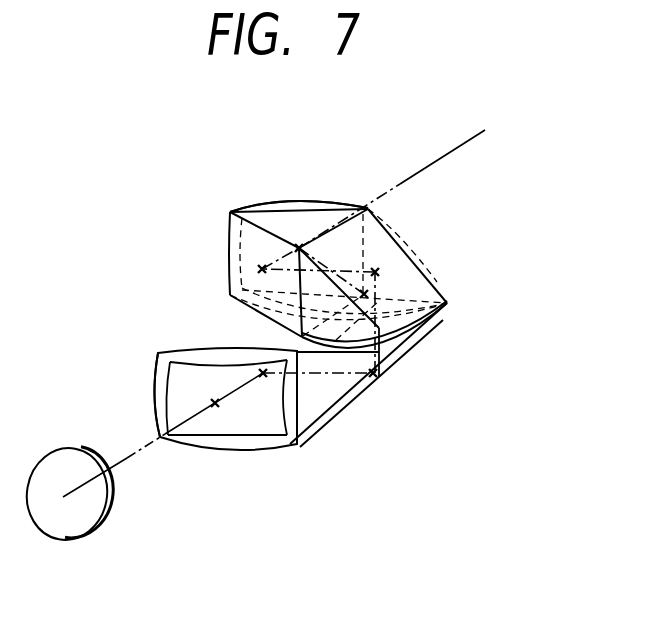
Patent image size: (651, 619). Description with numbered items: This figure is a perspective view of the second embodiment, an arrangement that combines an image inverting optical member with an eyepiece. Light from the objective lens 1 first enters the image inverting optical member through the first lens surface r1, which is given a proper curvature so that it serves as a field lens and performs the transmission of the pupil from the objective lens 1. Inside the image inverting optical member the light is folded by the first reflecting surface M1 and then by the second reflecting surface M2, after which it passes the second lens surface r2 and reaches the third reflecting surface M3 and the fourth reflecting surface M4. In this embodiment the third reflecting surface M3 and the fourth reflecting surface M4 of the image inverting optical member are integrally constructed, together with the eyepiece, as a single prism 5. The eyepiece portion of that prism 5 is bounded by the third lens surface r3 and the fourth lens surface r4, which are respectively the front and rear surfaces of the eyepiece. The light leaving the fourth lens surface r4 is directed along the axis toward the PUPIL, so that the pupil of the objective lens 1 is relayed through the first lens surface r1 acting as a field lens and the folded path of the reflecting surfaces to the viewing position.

The objective lens 1 is at (92, 526).
The prism 5 is at (302, 223).
The first reflecting surface M1 is at (203, 341).
The second reflecting surface M2 is at (352, 403).
The third reflecting surface M3 is at (395, 243).
The fourth reflecting surface M4 is at (229, 255).
The first lens surface r1 is at (252, 432).
The second lens surface r2 is at (449, 305).
The third lens surface r3 is at (437, 282).
The fourth lens surface r4 is at (257, 199).
The pupil PUPIL is at (433, 175).